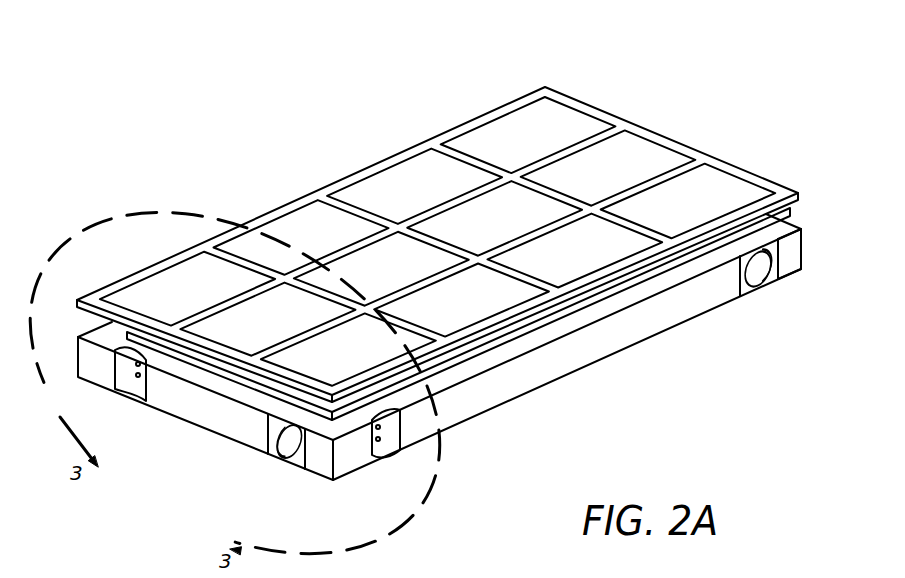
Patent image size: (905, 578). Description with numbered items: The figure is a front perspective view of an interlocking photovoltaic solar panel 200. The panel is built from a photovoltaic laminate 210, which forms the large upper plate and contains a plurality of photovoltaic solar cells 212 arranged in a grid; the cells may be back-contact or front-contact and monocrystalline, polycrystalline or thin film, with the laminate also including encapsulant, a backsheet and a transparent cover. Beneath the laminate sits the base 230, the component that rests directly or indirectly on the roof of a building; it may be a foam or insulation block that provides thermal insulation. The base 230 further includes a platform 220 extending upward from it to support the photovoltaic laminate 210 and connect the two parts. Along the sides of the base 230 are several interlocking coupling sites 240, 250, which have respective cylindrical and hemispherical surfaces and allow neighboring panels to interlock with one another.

The photovoltaic solar panel 200 is at (700, 82).
The photovoltaic laminate 210 is at (400, 152).
The photovoltaic solar cells 212 is at (535, 123).
The platform 220 is at (773, 233).
The base 230 is at (792, 262).
The coupling site 240 is at (130, 397).
The coupling site 250 is at (283, 470).